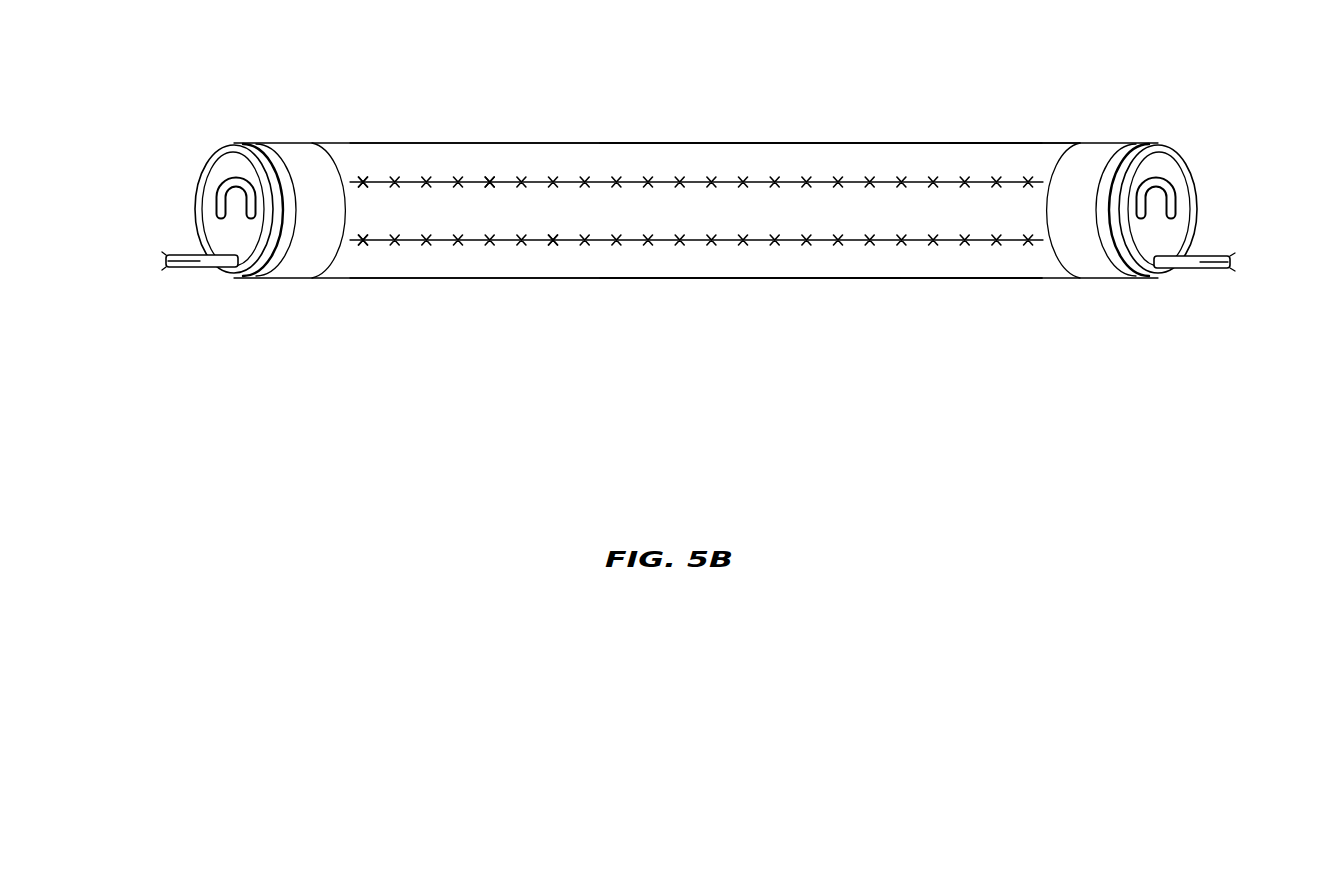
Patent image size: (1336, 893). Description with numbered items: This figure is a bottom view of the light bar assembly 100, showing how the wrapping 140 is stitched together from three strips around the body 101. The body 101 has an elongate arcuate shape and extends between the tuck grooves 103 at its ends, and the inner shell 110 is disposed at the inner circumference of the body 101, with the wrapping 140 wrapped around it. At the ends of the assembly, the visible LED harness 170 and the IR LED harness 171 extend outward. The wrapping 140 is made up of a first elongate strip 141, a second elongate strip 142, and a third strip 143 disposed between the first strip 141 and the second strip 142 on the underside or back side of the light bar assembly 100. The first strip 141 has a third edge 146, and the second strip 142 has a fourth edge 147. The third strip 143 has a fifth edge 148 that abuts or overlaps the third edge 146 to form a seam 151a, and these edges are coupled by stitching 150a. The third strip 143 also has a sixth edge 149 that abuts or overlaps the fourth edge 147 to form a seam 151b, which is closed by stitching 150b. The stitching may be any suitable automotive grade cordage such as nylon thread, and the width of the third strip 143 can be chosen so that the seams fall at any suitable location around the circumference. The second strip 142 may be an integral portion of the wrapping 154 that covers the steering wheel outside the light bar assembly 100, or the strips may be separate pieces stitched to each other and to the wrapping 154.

The light bar assembly 100 is at (500, 358).
The body 101 is at (478, 280).
The tuck grooves 103 is at (270, 143).
The inner shell 110 is at (1022, 160).
The wrapping 140 is at (388, 280).
The first elongate strip 141 is at (880, 272).
The second elongate strip 142 is at (768, 147).
The third strip 143 is at (725, 218).
The third edge 146 is at (818, 258).
The fourth edge 147 is at (828, 178).
The fifth edge 148 is at (661, 236).
The sixth edge 149 is at (632, 190).
The stitching 150a is at (357, 242).
The stitching 150b is at (488, 178).
The seam 151a is at (545, 242).
The seam 151b is at (362, 180).
The wrapping 154 is at (307, 143).
The visible LED harness 170 is at (195, 262).
The IR LED harness 171 is at (1205, 268).